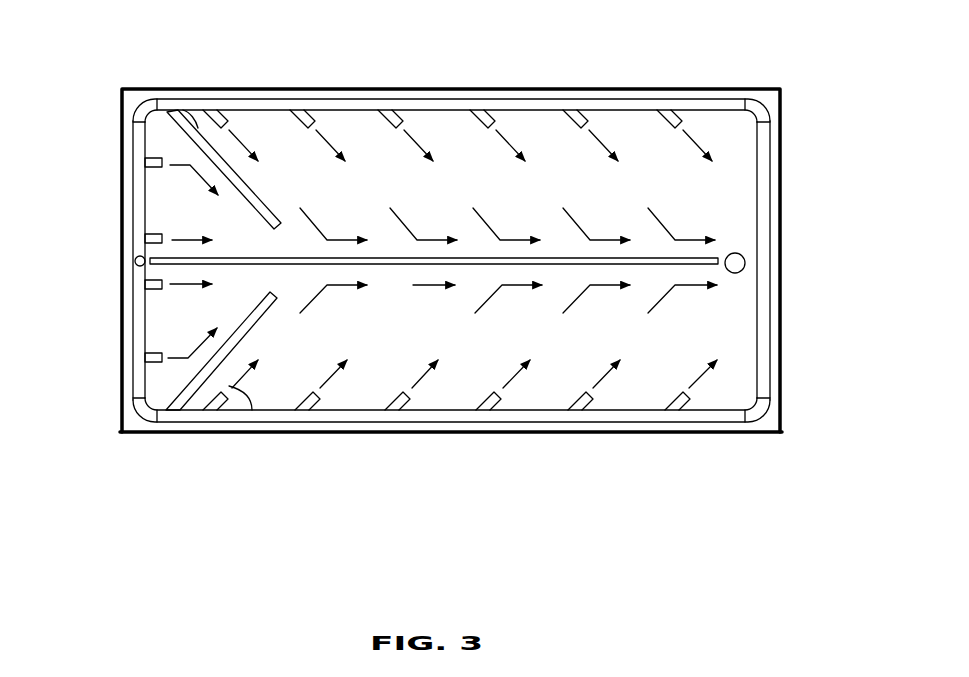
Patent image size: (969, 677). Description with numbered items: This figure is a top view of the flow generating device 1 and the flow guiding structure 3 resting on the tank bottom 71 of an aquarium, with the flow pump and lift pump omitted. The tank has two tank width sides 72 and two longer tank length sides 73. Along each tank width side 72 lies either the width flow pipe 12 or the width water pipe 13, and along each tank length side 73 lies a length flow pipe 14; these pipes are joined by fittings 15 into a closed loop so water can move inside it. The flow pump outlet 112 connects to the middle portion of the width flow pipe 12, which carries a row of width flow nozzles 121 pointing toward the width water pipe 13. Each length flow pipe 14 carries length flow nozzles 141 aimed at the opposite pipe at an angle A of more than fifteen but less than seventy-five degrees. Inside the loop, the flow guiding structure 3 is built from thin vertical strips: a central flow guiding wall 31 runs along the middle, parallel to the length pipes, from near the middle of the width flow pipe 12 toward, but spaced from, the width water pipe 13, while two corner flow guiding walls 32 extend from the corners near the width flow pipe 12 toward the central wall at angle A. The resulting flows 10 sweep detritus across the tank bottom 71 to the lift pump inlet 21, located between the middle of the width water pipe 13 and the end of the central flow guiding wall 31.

The flow generating device 1 is at (462, 276).
The flow guiding structure 3 is at (165, 222).
The flows 10 is at (348, 238).
The width flow pipe 12 is at (138, 382).
The width water pipe 13 is at (763, 206).
The length flow pipe 14 is at (417, 415).
The fittings 15 is at (145, 100).
The lift pump inlet 21 is at (745, 262).
The central flow guiding wall 31 is at (480, 258).
The corner flow guiding wall 32 is at (273, 208).
The tank bottom 71 is at (633, 187).
The tank width side 72 is at (782, 362).
The tank length side 73 is at (622, 434).
The flow pump outlet 112 is at (136, 258).
The width flow nozzles 121 is at (153, 285).
The length flow nozzles 141 is at (495, 400).
The angle A is at (202, 128).